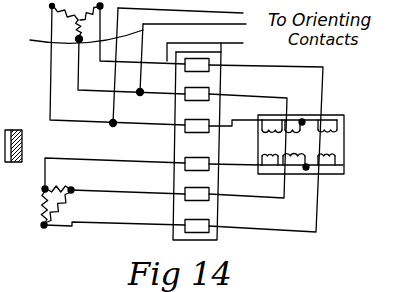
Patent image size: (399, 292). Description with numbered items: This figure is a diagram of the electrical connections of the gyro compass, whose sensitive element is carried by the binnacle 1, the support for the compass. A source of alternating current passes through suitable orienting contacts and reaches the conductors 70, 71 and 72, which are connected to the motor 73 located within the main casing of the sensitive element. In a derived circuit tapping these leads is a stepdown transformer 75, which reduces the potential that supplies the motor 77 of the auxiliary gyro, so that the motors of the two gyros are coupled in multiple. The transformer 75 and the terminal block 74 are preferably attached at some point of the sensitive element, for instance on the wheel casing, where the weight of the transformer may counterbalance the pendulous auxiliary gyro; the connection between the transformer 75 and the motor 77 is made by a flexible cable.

The binnacle 1 is at (23, 148).
The conductor 70 is at (201, 14).
The conductor 71 is at (77, 40).
The conductor 72 is at (220, 149).
The motor 73 is at (52, 14).
The terminal block 74 is at (220, 237).
The stepdown transformer 75 is at (327, 113).
The motor of the auxiliary gyro 77 is at (66, 181).